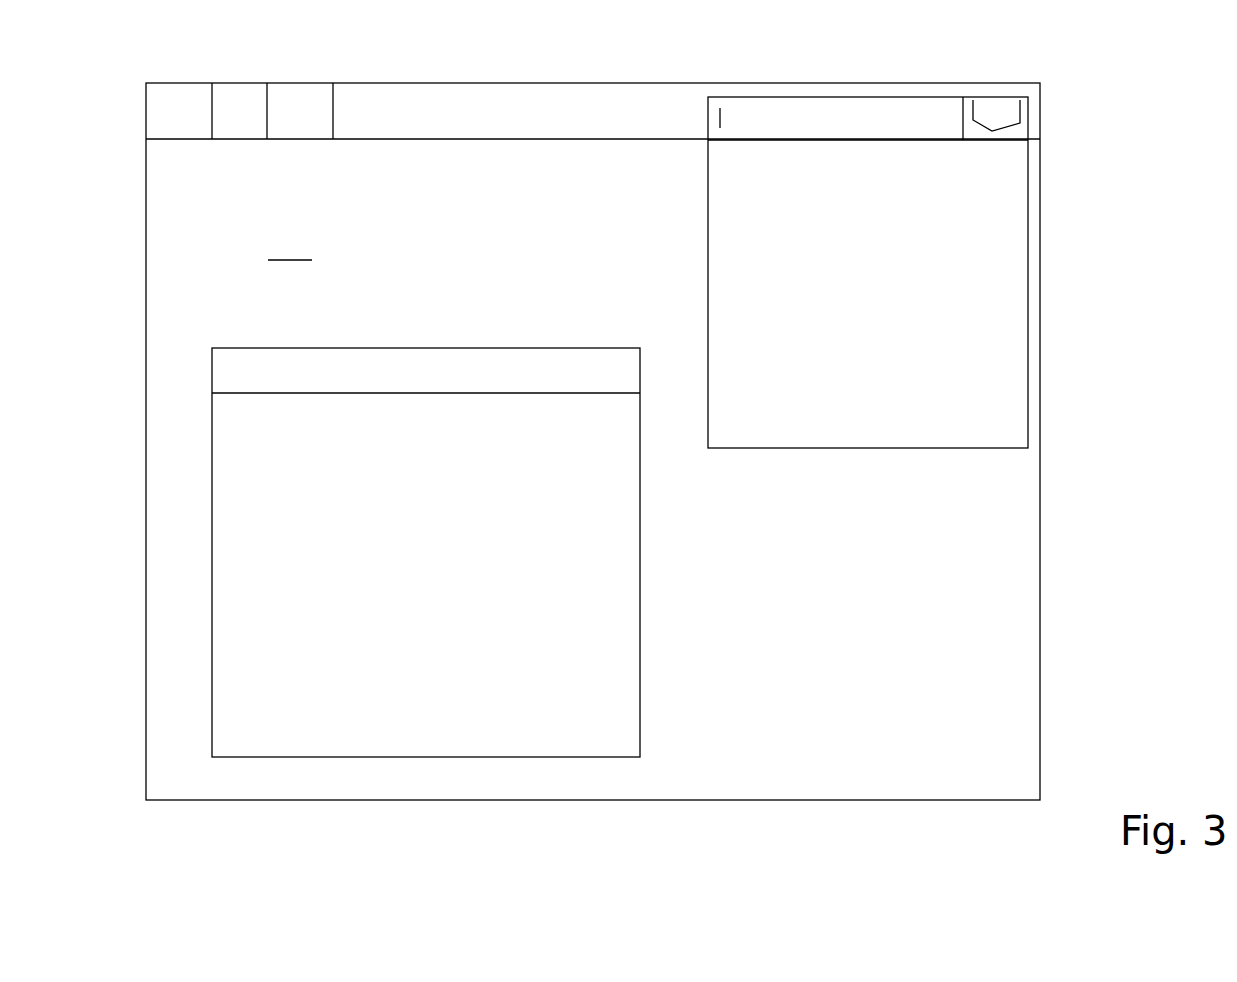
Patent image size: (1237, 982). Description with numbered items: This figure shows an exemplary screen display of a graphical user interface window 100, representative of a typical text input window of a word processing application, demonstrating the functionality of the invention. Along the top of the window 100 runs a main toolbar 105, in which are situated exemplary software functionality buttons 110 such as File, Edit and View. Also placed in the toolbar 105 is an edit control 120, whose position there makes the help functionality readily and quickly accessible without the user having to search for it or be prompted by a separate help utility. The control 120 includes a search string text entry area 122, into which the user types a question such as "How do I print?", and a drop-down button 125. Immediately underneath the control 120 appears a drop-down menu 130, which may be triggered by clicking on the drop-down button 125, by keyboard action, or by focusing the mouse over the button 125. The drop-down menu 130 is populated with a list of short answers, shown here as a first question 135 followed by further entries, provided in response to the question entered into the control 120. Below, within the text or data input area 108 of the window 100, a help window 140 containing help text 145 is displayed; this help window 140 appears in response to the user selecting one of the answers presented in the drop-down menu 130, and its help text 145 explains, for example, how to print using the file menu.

The graphical user interface window 100 is at (1040, 585).
The main toolbar 105 is at (592, 95).
The text or data input area 108 is at (290, 247).
The software functionality buttons 110 is at (292, 97).
The edit control 120 is at (845, 100).
The search string text entry area 122 is at (928, 110).
The drop-down button 125 is at (1000, 112).
The drop-down menu 130 is at (996, 295).
The first question entry 135 is at (918, 193).
The help window 140 is at (640, 553).
The help text 145 is at (420, 505).